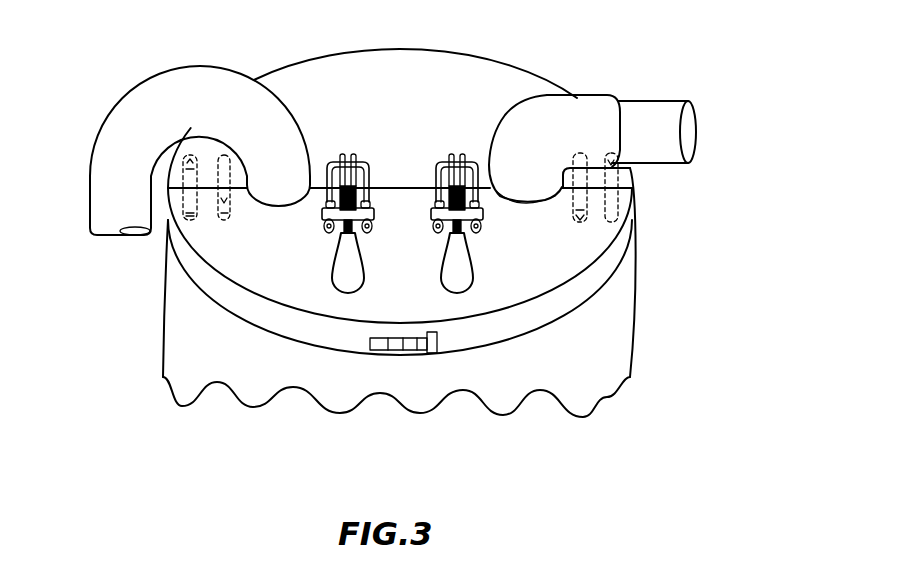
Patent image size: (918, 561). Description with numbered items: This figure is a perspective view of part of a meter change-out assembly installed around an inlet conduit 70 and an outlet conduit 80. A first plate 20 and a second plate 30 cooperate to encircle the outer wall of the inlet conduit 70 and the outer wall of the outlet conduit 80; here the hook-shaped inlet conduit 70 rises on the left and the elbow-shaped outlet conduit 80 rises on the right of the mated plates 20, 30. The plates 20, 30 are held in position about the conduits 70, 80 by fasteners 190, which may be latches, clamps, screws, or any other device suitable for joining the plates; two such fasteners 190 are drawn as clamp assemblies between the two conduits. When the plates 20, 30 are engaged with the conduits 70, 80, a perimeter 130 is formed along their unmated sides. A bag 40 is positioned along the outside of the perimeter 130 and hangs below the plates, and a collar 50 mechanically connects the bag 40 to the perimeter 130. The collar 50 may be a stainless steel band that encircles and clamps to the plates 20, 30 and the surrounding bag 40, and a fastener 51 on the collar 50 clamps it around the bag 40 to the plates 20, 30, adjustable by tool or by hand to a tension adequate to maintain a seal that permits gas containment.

The first plate 20 is at (335, 83).
The second plate 30 is at (555, 255).
The bag 40 is at (190, 348).
The collar 50 is at (198, 272).
The fastener 51 is at (395, 350).
The inlet conduit 70 is at (157, 72).
The outlet conduit 80 is at (630, 100).
The perimeter 130 is at (637, 215).
The fastener 190 is at (362, 160).